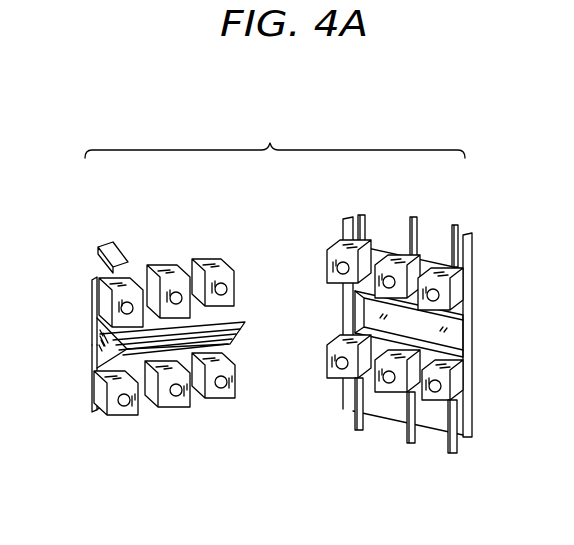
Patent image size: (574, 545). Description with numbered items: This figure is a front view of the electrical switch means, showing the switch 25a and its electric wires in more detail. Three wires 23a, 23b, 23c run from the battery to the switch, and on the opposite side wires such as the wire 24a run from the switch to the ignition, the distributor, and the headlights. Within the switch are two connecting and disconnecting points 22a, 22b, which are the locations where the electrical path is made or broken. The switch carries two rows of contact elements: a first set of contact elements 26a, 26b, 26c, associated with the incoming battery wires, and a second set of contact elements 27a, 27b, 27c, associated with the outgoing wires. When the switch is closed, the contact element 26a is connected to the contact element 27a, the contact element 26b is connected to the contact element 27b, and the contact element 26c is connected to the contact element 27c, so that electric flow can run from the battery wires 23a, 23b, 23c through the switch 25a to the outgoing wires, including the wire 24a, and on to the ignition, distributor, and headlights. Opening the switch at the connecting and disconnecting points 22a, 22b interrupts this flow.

The connecting and disconnecting point 22a is at (92, 295).
The connecting and disconnecting point 22b is at (92, 383).
The wire from battery to switch 23a is at (357, 222).
The wire from battery to switch 23b is at (410, 217).
The wire from battery to switch 23c is at (453, 225).
The wire from switch to load 24a is at (352, 423).
The switch 25a is at (275, 134).
The switch contact element 26a is at (128, 284).
The switch contact element 26b is at (170, 273).
The switch contact element 26c is at (217, 264).
The switch contact element 27a is at (128, 418).
The switch contact element 27b is at (177, 409).
The switch contact element 27c is at (221, 402).